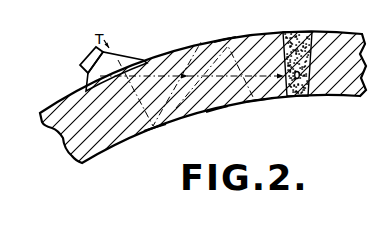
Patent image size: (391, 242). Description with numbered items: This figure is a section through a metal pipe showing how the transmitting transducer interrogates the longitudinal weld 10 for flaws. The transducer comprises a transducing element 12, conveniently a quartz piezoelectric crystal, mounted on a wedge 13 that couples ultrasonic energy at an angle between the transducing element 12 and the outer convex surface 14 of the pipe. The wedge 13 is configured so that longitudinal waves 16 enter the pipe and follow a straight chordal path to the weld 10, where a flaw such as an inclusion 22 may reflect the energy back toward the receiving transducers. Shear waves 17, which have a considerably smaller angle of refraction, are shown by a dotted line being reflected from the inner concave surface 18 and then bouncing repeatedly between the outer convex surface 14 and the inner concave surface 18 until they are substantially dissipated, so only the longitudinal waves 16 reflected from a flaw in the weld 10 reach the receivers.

The longitudinal weld 10 is at (311, 34).
The transducing element 12 is at (87, 58).
The wedge 13 is at (115, 55).
The outer convex surface 14 is at (225, 38).
The longitudinal waves 16 is at (254, 100).
The shear waves 17 is at (154, 127).
The inner concave surface 18 is at (217, 110).
The inclusion 22 is at (299, 32).